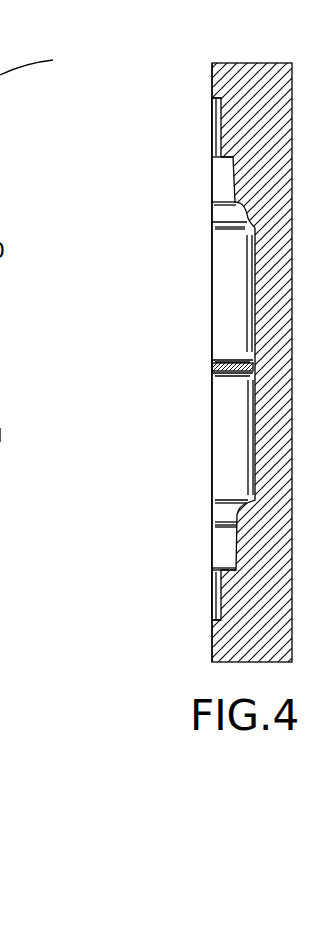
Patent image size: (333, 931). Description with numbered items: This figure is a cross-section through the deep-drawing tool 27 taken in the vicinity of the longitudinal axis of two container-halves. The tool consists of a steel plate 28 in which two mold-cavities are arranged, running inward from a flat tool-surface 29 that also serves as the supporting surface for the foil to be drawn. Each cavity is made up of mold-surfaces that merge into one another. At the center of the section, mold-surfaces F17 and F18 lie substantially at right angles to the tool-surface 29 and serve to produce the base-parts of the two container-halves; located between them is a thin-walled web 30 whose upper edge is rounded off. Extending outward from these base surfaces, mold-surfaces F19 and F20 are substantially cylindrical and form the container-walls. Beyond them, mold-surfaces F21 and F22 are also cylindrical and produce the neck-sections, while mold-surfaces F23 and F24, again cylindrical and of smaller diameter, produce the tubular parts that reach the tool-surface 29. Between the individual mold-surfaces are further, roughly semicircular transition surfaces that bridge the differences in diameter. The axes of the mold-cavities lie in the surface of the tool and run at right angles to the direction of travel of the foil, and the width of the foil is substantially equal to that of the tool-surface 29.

The deep-drawing tool 27 is at (179, 78).
The steel plate 28 is at (245, 81).
The flat tool-surface 29 is at (211, 643).
The thin-walled web 30 is at (214, 368).
The mold-surface F17 is at (232, 380).
The mold-surface F18 is at (230, 357).
The mold-surface F19 is at (253, 440).
The mold-surface F20 is at (253, 277).
The mold-surface F21 is at (228, 552).
The mold-surface F22 is at (222, 178).
The mold-surface F23 is at (211, 600).
The mold-surface F24 is at (211, 125).